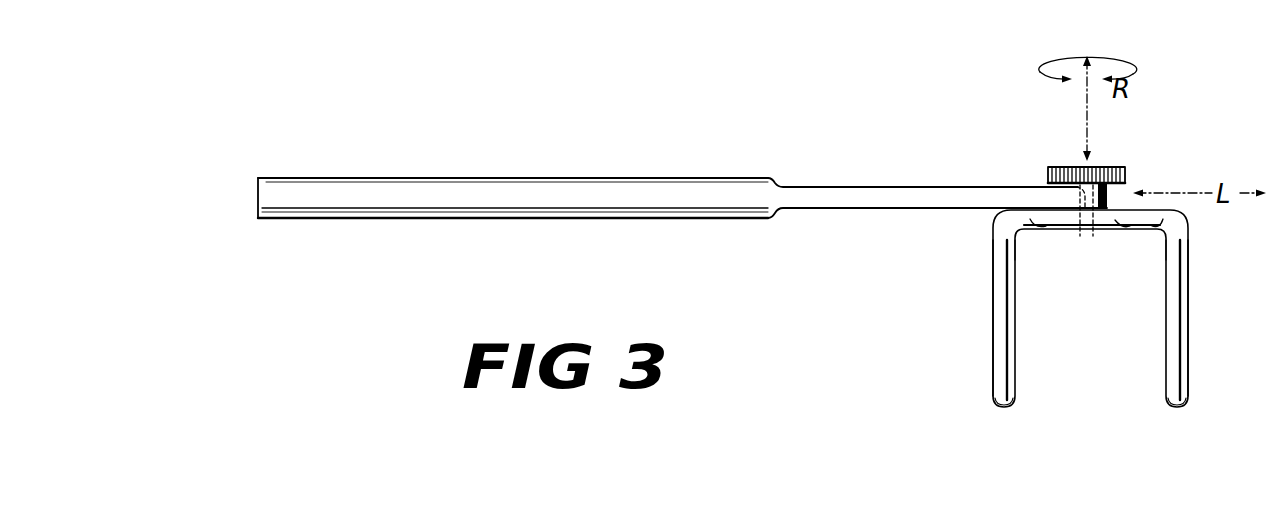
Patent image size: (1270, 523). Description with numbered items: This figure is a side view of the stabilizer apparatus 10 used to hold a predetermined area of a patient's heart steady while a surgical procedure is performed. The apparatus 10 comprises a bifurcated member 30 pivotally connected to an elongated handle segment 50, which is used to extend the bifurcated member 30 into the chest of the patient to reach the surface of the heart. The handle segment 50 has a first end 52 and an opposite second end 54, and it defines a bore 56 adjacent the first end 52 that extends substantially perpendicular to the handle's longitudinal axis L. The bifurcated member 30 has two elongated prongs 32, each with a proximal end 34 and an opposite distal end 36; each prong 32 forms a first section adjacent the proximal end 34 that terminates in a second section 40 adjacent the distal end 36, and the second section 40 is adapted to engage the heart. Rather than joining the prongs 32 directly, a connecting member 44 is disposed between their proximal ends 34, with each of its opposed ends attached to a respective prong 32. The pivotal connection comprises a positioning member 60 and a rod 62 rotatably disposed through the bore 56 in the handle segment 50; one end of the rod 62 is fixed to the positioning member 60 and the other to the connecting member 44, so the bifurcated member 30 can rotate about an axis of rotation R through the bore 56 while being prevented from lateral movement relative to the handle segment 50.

The apparatus 10 is at (909, 154).
The handle segment 50 is at (562, 178).
The second end 54 is at (258, 177).
The positioning member 60 is at (1083, 166).
The rod 62 is at (1062, 200).
The first end 52 is at (1112, 198).
The bore 56 is at (1083, 233).
The connecting member 44 is at (1128, 228).
The bifurcated member 30 is at (993, 314).
The prongs 32 is at (995, 367).
The proximal end 34 is at (1043, 232).
The distal end 36 is at (1004, 406).
The second section 40 is at (1015, 337).